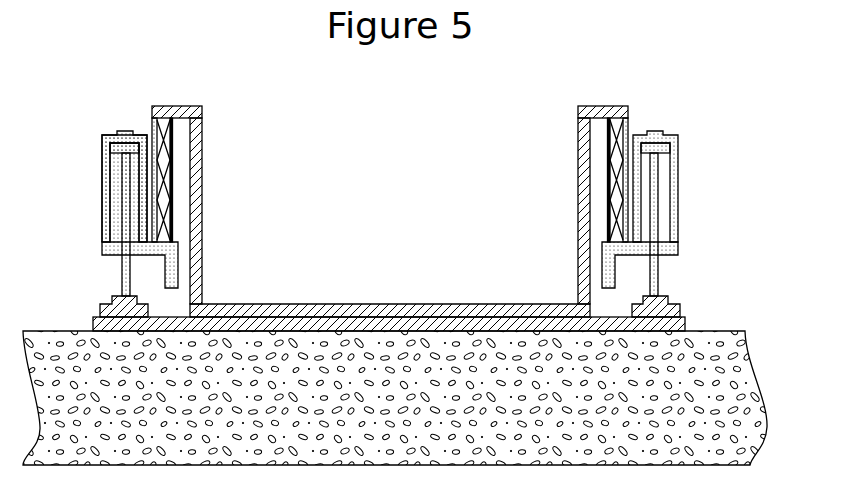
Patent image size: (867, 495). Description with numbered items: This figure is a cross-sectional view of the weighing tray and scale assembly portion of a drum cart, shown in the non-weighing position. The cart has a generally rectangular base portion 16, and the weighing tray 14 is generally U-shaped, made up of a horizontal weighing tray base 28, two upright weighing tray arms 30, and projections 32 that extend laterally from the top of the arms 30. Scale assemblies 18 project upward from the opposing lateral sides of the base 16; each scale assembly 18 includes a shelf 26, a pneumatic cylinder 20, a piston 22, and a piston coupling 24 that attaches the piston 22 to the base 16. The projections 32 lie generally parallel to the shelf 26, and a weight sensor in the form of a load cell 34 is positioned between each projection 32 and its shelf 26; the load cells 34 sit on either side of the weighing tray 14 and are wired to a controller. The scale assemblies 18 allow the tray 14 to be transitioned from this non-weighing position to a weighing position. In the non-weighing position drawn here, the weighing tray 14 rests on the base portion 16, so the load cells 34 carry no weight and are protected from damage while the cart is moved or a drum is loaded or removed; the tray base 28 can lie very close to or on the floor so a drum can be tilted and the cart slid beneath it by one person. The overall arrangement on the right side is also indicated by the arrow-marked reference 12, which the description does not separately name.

The vibration isolation device 12 is at (681, 281).
The weighing tray 14 is at (203, 222).
The base portion 16 is at (93, 320).
The scale assembly 18 is at (679, 223).
The pneumatic cylinder 20 is at (677, 173).
The piston 22 is at (658, 190).
The piston coupling 24 is at (110, 302).
The shelf 26 is at (678, 249).
The weighing tray base 28 is at (433, 303).
The weighing tray arm 30 is at (577, 155).
The projection 32 is at (593, 108).
The load cell 34 is at (608, 163).